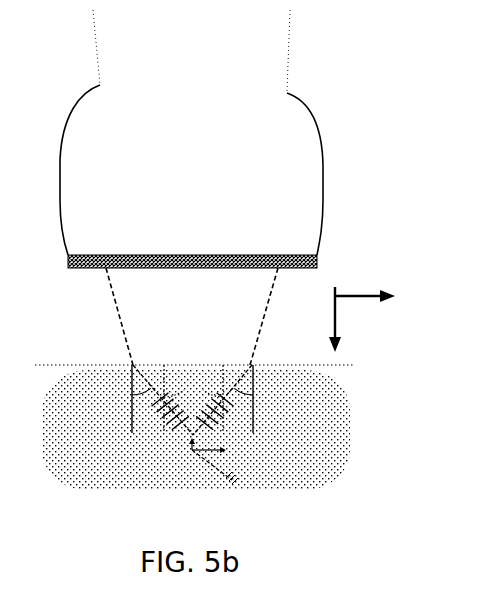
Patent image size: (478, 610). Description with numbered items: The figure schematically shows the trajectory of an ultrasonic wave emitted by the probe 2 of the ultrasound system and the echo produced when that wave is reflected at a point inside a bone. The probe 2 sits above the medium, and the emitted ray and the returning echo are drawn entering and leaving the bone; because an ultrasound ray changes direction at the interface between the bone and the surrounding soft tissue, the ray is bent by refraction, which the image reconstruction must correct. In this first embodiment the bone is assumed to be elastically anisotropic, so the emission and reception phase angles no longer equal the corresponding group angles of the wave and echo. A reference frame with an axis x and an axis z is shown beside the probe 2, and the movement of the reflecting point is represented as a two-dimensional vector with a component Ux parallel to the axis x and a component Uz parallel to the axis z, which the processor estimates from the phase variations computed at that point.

The probe 2 is at (285, 105).
The movement component parallel to the axis X Ux is at (222, 451).
The movement component parallel to the axis Z Uz is at (201, 461).
The axis X x is at (369, 288).
The axis Z z is at (329, 321).